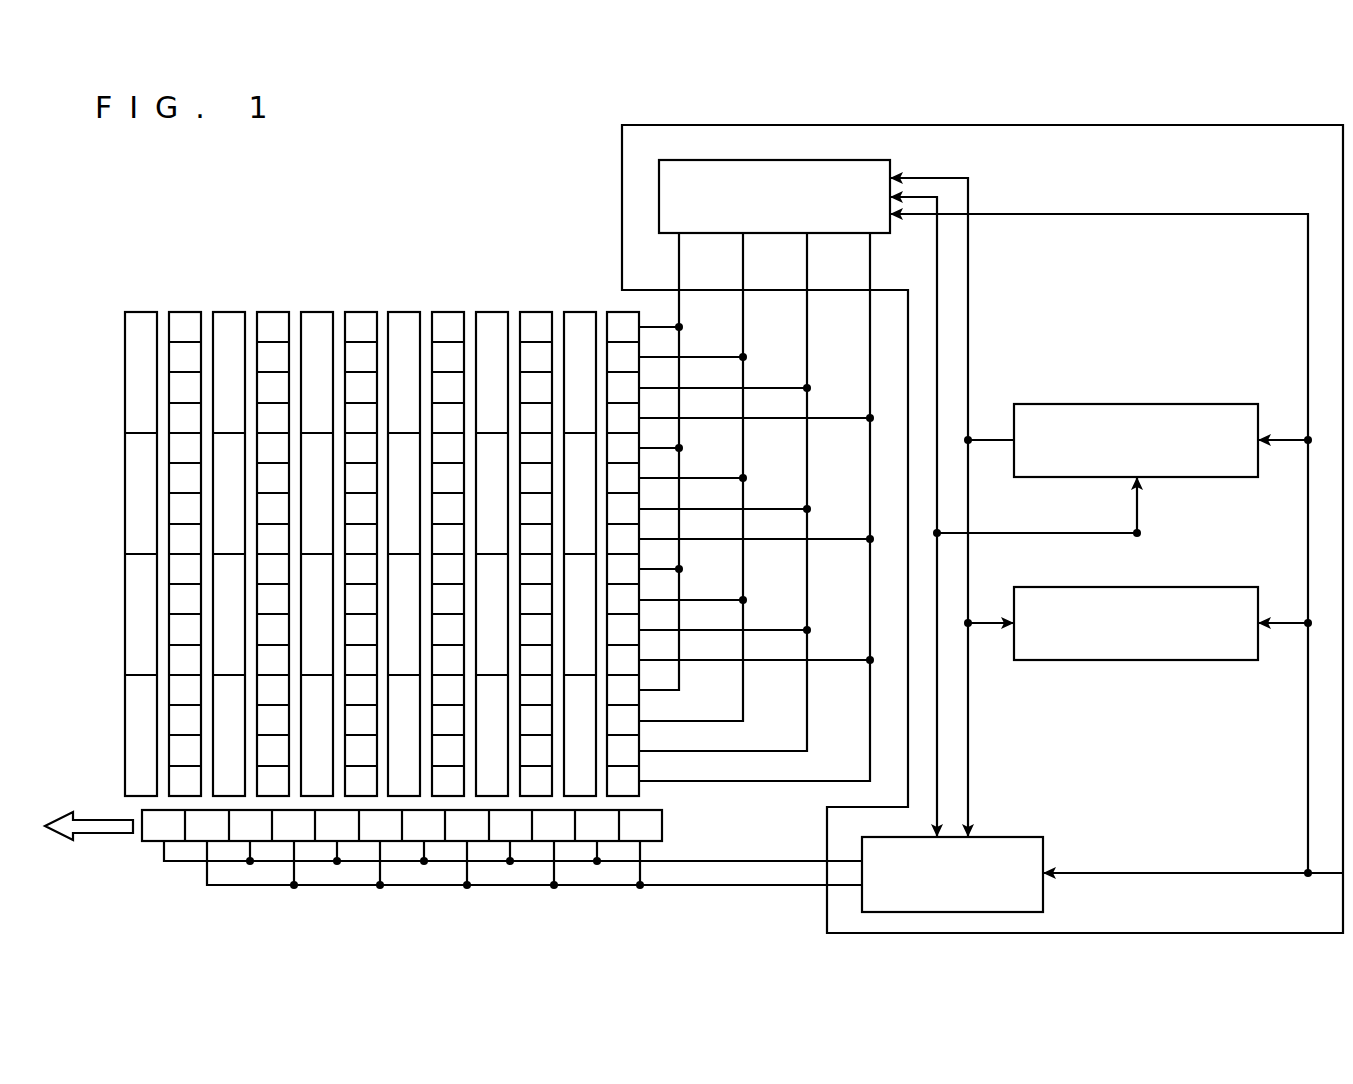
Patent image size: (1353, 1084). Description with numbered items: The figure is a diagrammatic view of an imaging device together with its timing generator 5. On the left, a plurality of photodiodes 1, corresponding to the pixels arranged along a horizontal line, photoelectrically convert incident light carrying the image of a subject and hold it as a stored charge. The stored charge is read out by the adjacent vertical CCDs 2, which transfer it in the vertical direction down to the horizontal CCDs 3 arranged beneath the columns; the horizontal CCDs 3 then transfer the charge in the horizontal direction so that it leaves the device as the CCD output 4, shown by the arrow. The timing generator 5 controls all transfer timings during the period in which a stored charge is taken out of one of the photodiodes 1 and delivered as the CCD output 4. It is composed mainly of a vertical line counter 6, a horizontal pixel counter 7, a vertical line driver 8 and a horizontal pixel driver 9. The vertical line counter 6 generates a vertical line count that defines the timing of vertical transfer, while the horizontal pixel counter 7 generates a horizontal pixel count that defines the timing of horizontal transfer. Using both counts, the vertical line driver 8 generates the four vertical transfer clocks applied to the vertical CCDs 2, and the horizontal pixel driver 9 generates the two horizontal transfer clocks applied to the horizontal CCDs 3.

The photodiodes 1 is at (580, 312).
The vertical CCDs 2 is at (608, 312).
The horizontal CCDs 3 is at (663, 826).
The CCD output 4 is at (86, 806).
The timing generator 5 is at (1083, 125).
The vertical line counter 6 is at (1183, 404).
The horizontal pixel counter 7 is at (1216, 587).
The vertical line driver 8 is at (774, 160).
The horizontal pixel driver 9 is at (1013, 837).